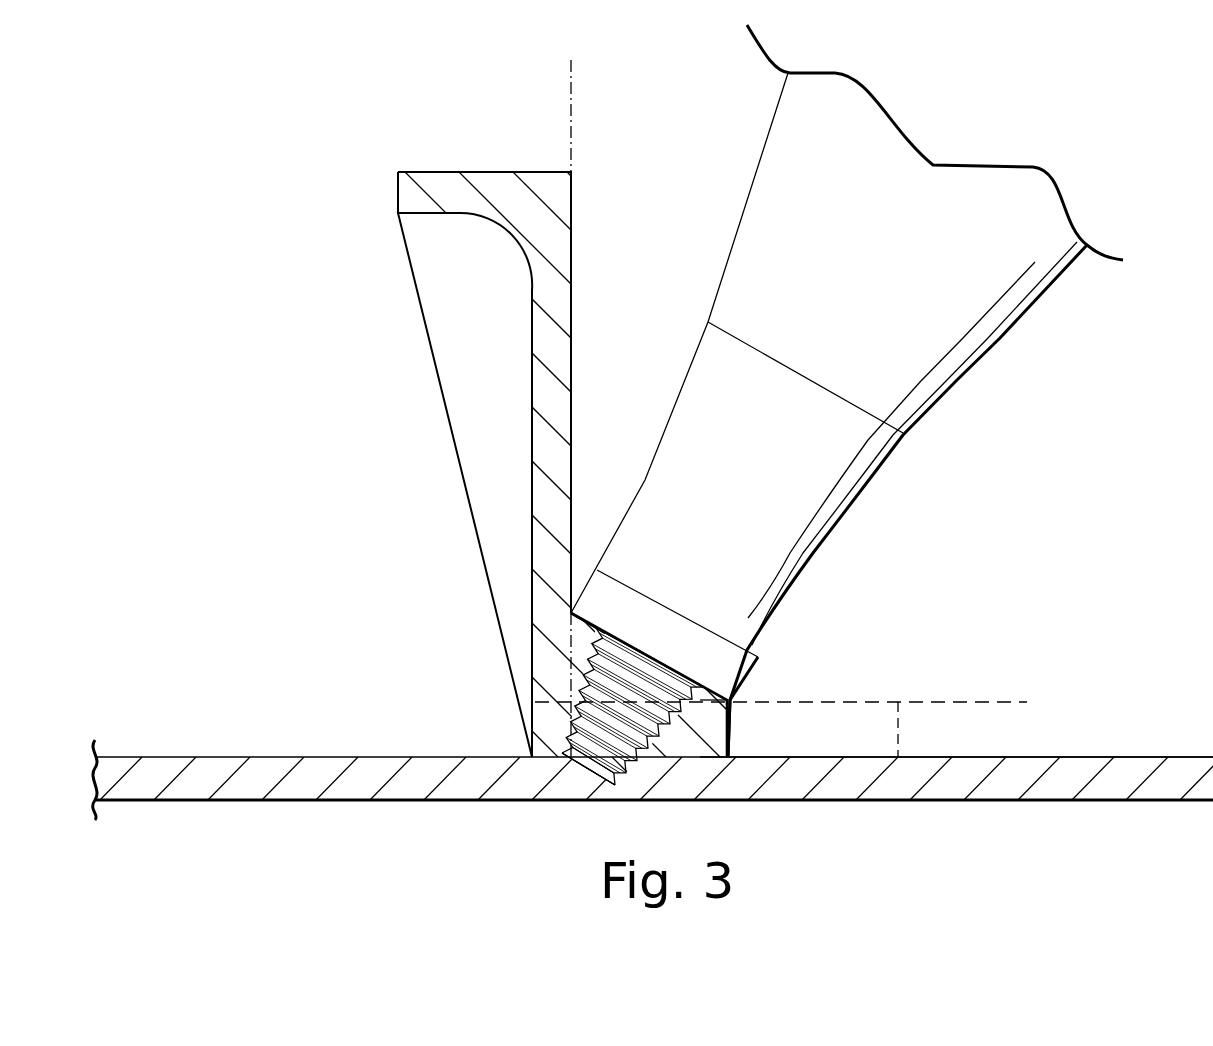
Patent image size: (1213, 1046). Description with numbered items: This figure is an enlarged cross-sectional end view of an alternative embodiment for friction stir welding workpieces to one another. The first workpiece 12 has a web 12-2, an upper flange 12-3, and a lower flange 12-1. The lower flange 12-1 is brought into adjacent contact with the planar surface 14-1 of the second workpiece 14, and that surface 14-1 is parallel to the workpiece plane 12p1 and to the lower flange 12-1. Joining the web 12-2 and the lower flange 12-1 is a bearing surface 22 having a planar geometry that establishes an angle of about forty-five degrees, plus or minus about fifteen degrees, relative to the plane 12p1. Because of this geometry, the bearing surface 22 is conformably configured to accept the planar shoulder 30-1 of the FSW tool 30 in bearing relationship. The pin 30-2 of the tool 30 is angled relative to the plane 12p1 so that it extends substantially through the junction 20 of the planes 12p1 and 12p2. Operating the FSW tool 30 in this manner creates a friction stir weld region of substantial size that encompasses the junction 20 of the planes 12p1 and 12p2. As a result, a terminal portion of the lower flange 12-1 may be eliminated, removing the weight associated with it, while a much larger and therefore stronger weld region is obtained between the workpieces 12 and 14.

The second workpiece 14 is at (262, 780).
The planar surface 14-1 is at (1088, 757).
The workpiece 12 is at (532, 385).
The flange 12-3 is at (433, 183).
The web 12-2 is at (548, 502).
The lower flange 12-1 is at (693, 747).
The workpiece plane 12p2 is at (578, 92).
The workpiece plane 12p1 is at (1010, 690).
The bearing surface 22 is at (583, 617).
The junction 20 is at (562, 688).
The pin 30-2 is at (600, 740).
The FSW tool 30 is at (958, 380).
The planar shoulder 30-1 is at (735, 677).